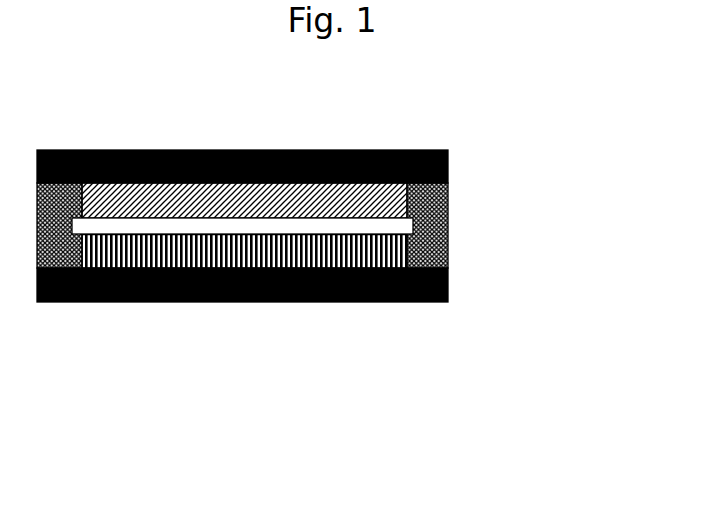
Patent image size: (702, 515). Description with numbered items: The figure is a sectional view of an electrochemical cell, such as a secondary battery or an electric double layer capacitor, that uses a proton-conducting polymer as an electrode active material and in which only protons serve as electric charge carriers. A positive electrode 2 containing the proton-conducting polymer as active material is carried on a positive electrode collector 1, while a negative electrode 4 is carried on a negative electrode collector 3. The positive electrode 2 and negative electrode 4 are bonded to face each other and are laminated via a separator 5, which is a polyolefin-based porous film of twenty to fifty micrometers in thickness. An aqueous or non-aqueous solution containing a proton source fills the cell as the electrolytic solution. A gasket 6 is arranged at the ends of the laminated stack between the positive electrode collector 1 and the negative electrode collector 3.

The positive electrode collector 1 is at (385, 206).
The positive electrode 2 is at (448, 163).
The negative electrode collector 3 is at (393, 257).
The negative electrode 4 is at (450, 286).
The separator 5 is at (388, 229).
The gasket 6 is at (448, 202).